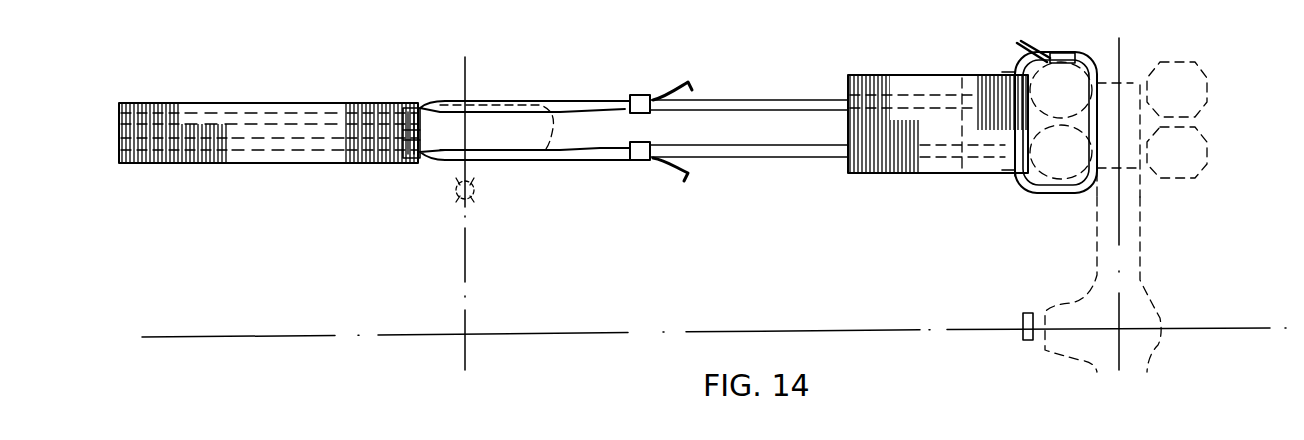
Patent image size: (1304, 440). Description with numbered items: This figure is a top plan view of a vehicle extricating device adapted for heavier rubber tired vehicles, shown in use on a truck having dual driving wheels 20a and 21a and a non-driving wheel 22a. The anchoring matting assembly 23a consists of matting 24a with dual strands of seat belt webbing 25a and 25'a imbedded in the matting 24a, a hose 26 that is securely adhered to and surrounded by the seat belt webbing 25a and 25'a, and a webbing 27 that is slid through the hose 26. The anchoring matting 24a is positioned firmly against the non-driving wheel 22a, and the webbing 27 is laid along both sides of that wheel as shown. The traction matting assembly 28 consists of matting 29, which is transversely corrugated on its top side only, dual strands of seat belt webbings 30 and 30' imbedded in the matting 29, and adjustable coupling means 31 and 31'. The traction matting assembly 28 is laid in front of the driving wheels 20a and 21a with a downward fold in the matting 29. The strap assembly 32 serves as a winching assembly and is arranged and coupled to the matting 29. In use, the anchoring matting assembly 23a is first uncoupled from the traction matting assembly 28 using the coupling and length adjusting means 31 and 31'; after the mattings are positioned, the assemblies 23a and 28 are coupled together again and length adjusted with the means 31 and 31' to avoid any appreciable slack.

The dual driving wheel 20a is at (1212, 70).
The dual driving wheel 21a is at (1212, 136).
The non-driving wheel 22a is at (565, 127).
The anchoring matting assembly 23a is at (355, 87).
The matting 24a is at (205, 102).
The seat belt webbing 25a is at (267, 120).
The seat belt webbing 25'a is at (288, 170).
The hose 26 is at (410, 160).
The webbing 27 is at (600, 155).
The traction matting assembly 28 is at (822, 75).
The matting 29 is at (905, 75).
The seat belt webbing 30 is at (749, 89).
The seat belt webbing 30' is at (749, 169).
The adjustable coupling means 31 is at (661, 88).
The adjustable coupling means 31' is at (659, 174).
The strap assembly 32 is at (1057, 37).